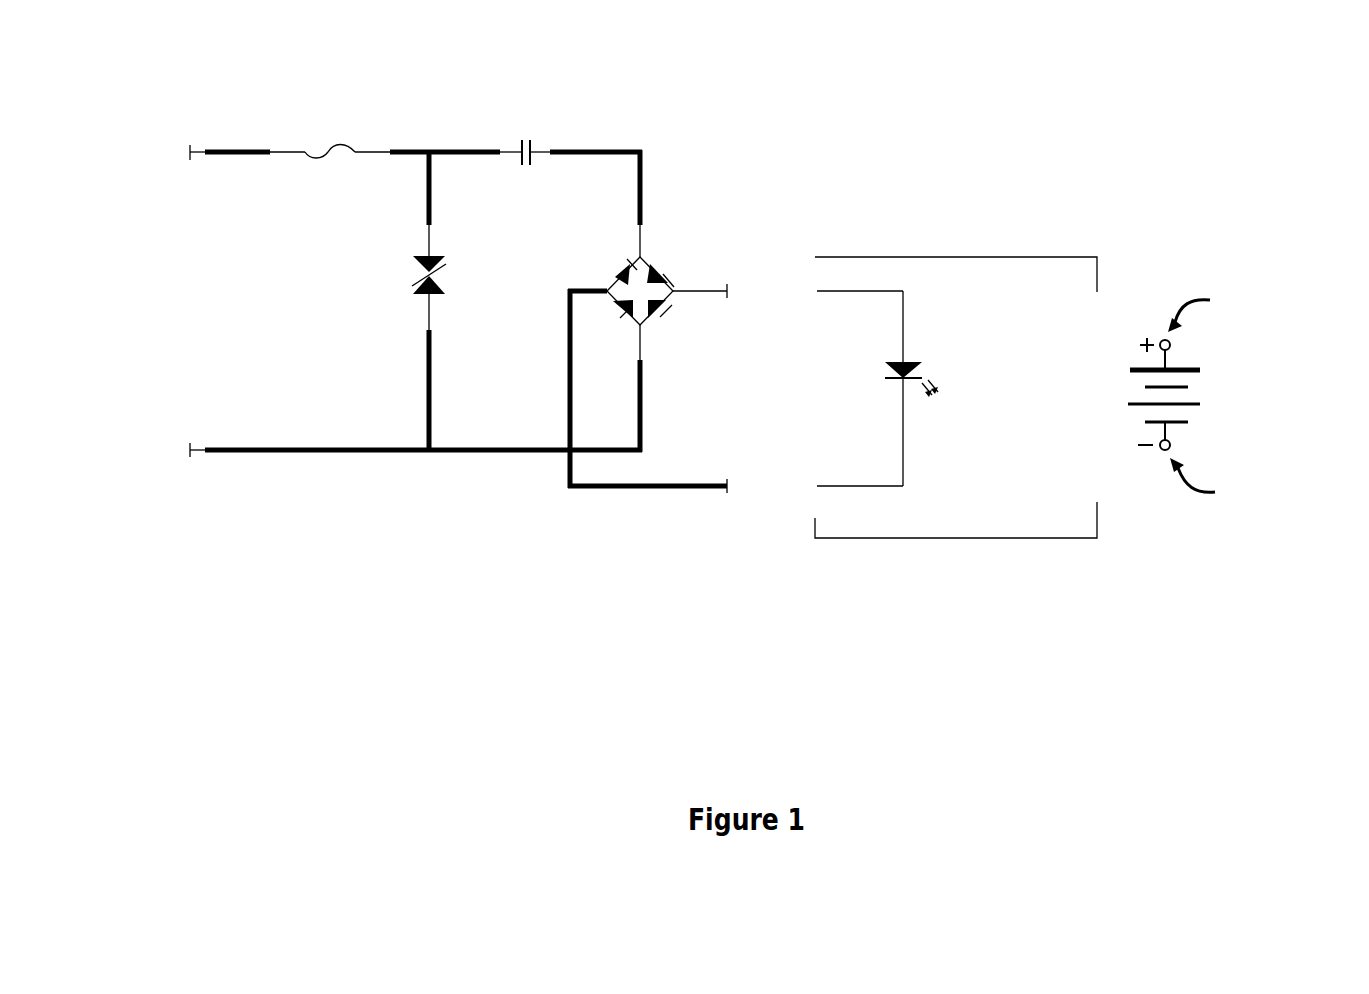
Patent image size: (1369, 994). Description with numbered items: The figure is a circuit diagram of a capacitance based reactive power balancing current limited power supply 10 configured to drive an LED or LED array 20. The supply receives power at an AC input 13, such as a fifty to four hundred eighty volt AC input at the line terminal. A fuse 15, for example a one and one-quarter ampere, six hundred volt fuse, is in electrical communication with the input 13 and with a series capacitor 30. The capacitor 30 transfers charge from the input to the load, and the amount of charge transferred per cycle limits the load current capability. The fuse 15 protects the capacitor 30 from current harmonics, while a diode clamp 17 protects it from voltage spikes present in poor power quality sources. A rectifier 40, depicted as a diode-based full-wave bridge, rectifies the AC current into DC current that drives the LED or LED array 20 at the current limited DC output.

The capacitance based reactive power balancing current limited power supply 10 is at (1105, 172).
The AC input 13 is at (180, 97).
The fuse 15 is at (297, 175).
The diode clamp 17 is at (404, 291).
The capacitor 30 is at (527, 116).
The rectifier 40 is at (662, 243).
The LED or LED array 20 is at (890, 390).